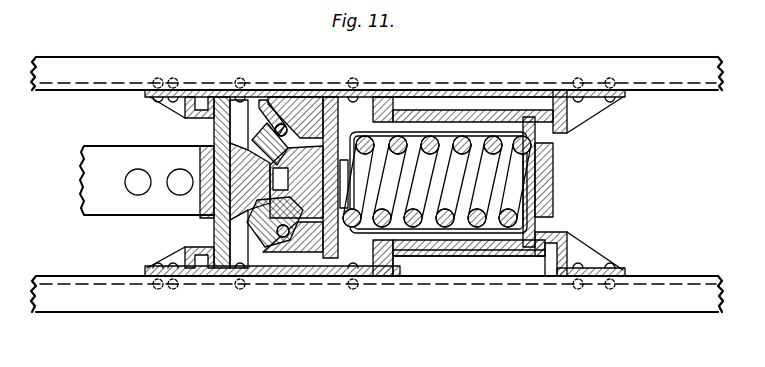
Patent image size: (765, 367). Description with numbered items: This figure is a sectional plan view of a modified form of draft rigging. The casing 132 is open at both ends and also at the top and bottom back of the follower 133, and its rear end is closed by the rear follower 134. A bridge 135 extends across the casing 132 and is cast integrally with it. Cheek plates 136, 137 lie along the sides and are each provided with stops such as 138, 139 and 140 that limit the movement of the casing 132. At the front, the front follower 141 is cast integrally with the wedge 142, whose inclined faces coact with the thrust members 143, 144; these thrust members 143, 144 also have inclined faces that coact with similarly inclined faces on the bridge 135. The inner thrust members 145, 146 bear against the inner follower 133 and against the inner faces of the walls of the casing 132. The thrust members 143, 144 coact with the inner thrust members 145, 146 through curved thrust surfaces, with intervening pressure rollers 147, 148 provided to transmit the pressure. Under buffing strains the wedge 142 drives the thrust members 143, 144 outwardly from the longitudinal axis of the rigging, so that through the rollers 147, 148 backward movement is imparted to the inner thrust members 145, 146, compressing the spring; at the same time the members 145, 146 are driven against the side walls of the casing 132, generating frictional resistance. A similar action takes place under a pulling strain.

The casing 132 is at (453, 240).
The follower 133 is at (342, 246).
The rear follower 134 is at (540, 222).
The bridge 135 is at (349, 179).
The cheek plate 136 is at (301, 96).
The cheek plate 137 is at (297, 272).
The stop 138 is at (192, 119).
The stop 139 is at (460, 113).
The stop 140 is at (566, 134).
The front follower 141 is at (222, 233).
The wedge 142 is at (247, 181).
The thrust member 143 is at (264, 124).
The thrust member 144 is at (230, 267).
The inner thrust member 145 is at (311, 116).
The inner thrust member 146 is at (309, 242).
The pressure roller 147 is at (279, 124).
The pressure roller 148 is at (266, 270).